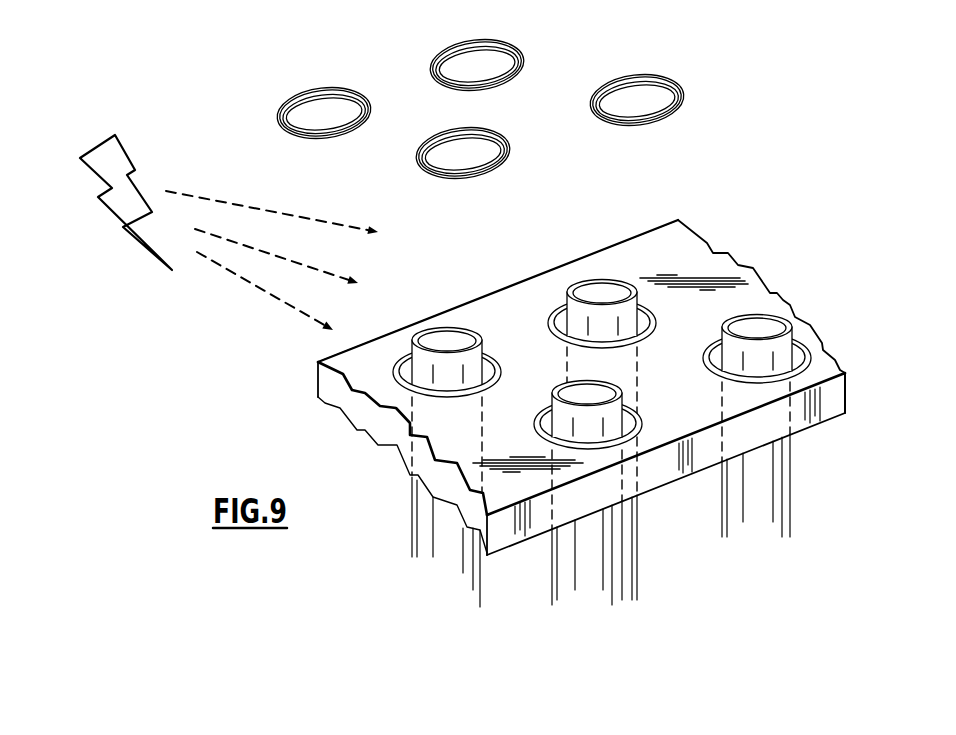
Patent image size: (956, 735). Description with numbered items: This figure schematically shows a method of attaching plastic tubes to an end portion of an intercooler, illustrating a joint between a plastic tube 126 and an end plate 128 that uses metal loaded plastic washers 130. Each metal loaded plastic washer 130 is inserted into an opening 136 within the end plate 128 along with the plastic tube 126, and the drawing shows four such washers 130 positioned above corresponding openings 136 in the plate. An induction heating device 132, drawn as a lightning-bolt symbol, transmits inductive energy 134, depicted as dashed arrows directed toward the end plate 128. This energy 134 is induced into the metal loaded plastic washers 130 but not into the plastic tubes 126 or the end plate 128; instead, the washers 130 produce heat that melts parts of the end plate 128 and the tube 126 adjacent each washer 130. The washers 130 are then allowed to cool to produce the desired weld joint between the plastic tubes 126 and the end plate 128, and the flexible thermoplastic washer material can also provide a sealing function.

The plastic tube 126 is at (425, 528).
The end plate 128 is at (366, 377).
The metal loaded plastic washer 130 is at (316, 82).
The induction heating device 132 is at (115, 208).
The inductive energy 134 is at (251, 306).
The opening 136 is at (632, 410).